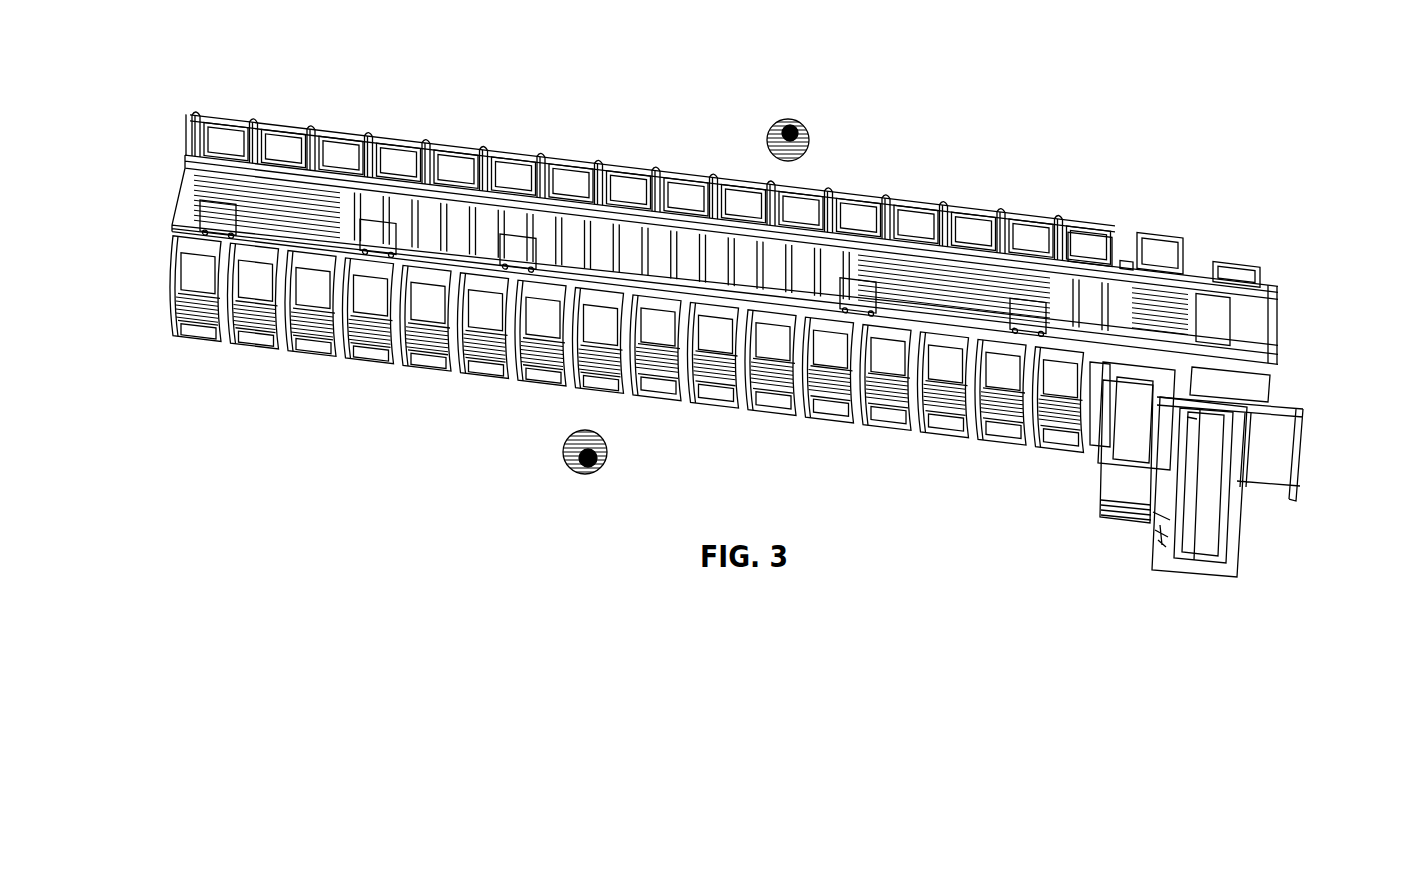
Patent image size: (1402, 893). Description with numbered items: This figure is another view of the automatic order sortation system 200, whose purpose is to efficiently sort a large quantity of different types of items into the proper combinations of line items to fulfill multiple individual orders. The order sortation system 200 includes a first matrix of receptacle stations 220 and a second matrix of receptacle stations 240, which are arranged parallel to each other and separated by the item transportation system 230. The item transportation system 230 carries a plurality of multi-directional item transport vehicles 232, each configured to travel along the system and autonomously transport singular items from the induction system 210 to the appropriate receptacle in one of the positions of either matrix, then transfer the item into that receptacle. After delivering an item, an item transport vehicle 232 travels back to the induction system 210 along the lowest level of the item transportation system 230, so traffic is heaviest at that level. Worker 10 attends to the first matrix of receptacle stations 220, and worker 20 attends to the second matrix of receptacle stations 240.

The order sortation system 200 is at (1190, 80).
The induction system 210 is at (1221, 600).
The first matrix of receptacle stations 220 is at (325, 400).
The item transportation system 230 is at (158, 192).
The item transport vehicle 232 is at (520, 236).
The second matrix of receptacle stations 240 is at (490, 98).
The worker 20 is at (775, 128).
The worker 10 is at (565, 466).